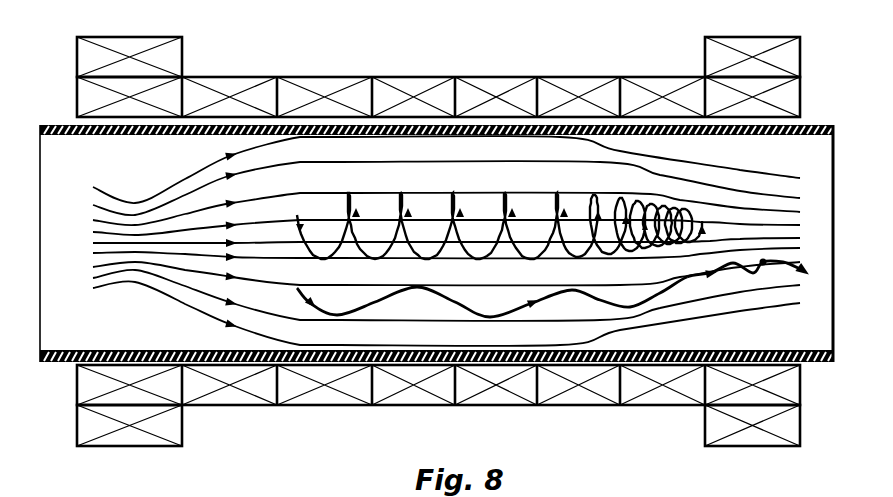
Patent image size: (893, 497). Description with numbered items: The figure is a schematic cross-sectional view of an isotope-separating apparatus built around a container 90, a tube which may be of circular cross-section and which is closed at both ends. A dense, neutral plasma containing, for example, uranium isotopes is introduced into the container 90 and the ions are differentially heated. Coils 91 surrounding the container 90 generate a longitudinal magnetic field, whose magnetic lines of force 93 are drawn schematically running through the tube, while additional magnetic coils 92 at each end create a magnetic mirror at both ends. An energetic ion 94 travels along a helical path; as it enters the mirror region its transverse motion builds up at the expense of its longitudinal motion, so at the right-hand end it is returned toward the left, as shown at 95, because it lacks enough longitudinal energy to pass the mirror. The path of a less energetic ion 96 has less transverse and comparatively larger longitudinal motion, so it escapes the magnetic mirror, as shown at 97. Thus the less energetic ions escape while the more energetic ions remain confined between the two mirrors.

The container 90 is at (62, 125).
The coils 91 is at (300, 404).
The additional magnetic coils 92 is at (133, 441).
The magnetic lines of force 93 is at (197, 166).
The energetic ion 94 is at (347, 199).
The returned path of energetic ion 95 is at (637, 196).
The path of less energetic ion 96 is at (447, 297).
The escape of less energetic ion 97 is at (789, 271).